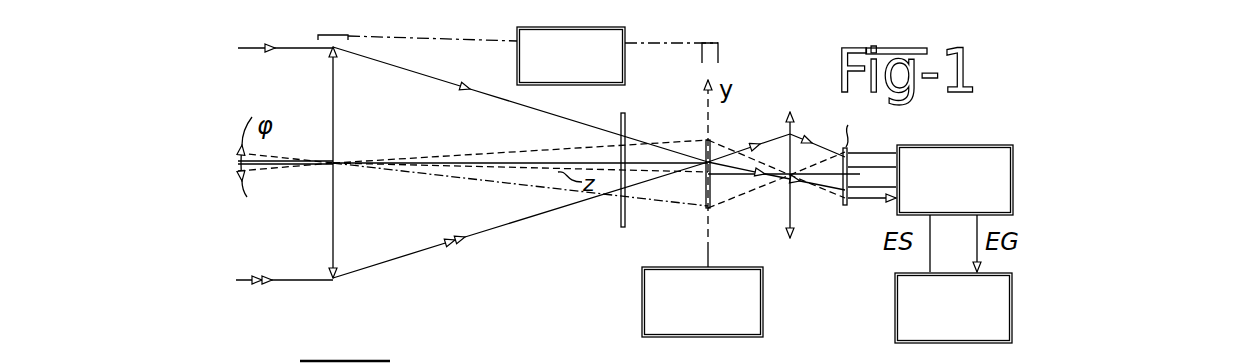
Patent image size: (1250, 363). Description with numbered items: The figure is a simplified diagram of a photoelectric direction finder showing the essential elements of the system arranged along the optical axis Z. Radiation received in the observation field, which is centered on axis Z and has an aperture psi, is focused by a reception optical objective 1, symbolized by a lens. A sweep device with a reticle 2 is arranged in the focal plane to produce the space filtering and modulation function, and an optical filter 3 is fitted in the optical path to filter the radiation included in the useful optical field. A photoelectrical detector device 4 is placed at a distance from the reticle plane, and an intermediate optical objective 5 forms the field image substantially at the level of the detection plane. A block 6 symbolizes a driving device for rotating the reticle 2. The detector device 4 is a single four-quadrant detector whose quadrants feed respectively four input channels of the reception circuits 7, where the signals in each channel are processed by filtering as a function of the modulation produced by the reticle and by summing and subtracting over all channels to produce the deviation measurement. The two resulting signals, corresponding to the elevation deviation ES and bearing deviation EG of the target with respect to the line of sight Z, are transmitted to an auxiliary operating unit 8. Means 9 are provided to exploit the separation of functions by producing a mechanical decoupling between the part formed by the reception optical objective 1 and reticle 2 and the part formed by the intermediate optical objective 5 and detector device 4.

The reception optical objective 1 is at (335, 112).
The reticle 2 is at (706, 200).
The optical filter 3 is at (618, 212).
The photoelectrical detector device 4 is at (843, 198).
The intermediate optical objective 5 is at (788, 204).
The driving device 6 is at (642, 290).
The reception circuits 7 is at (977, 145).
The auxiliary operating unit 8 is at (895, 296).
The decoupling means 9 is at (625, 85).